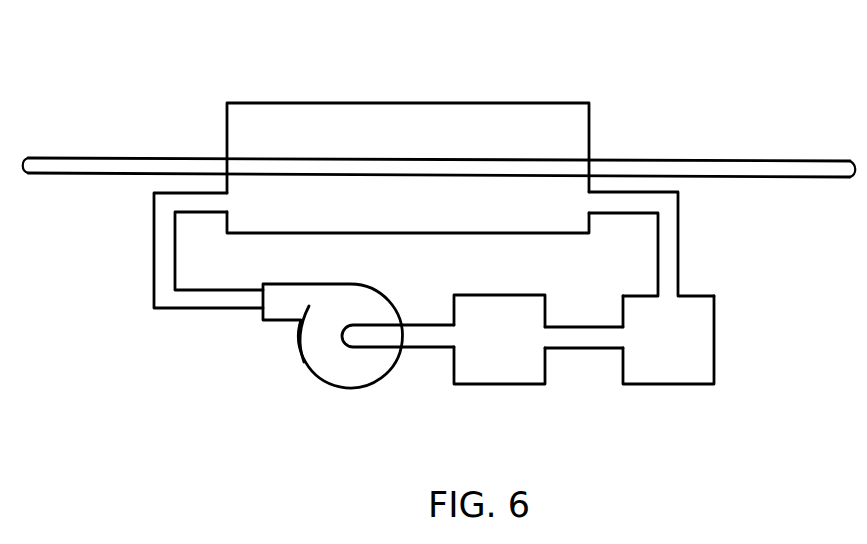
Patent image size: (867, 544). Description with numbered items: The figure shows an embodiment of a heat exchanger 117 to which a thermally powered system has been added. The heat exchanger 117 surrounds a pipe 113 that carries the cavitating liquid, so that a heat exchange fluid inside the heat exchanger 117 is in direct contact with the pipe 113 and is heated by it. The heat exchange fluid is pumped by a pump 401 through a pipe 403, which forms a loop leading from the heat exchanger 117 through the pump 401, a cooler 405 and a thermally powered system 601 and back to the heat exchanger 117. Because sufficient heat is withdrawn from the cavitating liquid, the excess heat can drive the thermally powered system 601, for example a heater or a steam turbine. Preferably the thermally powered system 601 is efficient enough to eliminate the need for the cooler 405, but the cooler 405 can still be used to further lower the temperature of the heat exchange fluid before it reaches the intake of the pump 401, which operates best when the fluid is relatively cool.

The heat exchanger 117 is at (649, 105).
The pipe 113 is at (87, 176).
The pipe 403 is at (153, 247).
The pump 401 is at (338, 389).
The cooler 405 is at (520, 384).
The thermally powered system 601 is at (657, 384).